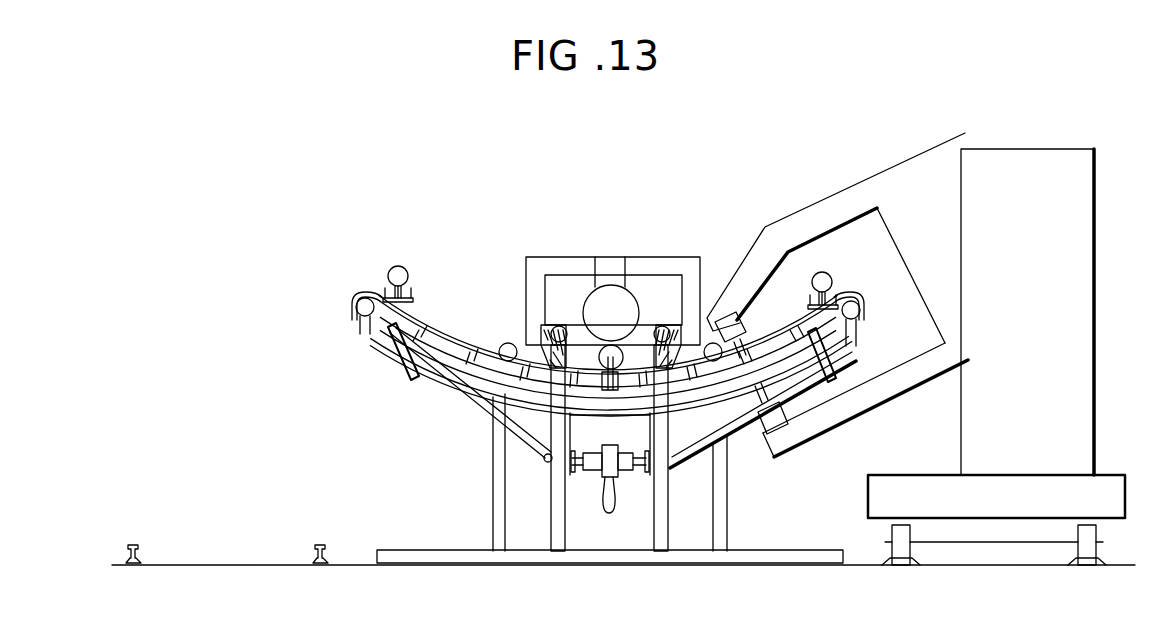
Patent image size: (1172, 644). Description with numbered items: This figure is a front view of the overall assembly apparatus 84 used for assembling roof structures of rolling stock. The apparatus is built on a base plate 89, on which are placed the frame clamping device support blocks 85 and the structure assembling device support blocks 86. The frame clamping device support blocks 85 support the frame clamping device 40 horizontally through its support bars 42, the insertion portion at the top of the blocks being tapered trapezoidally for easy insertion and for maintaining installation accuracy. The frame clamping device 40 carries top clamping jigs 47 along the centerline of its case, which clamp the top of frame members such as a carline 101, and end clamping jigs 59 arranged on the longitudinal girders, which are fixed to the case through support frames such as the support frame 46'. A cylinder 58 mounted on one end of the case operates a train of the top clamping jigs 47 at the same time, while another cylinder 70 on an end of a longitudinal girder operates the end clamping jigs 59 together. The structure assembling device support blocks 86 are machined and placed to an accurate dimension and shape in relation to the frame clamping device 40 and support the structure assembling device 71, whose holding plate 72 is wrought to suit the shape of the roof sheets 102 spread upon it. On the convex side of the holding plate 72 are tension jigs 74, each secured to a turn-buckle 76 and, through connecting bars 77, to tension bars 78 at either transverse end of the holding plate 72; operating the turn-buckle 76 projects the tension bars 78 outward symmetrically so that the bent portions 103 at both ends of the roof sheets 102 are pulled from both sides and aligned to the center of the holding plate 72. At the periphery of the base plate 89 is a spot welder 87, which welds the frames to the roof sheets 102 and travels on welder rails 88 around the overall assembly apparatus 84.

The frame clamping device 40 is at (517, 249).
The support bar 42 is at (540, 322).
The support frame 46' is at (592, 336).
The top clamping jig 47 is at (606, 391).
The pneumatic or hydraulic cylinder 58 is at (652, 374).
The end clamping jig 59 is at (408, 299).
The pneumatic or hydraulic cylinder 70 is at (393, 274).
The structure assembling device 71 is at (418, 385).
The holding plate 72 is at (393, 342).
The tension jig 74 is at (527, 465).
The turn-buckle 76 is at (593, 478).
The connecting bar 77 is at (470, 418).
The tension bar 78 is at (362, 316).
The overall assembly apparatus 84 is at (988, 110).
The frame clamping device support block 85 is at (660, 535).
The structure assembling device support block 86 is at (727, 516).
The spot welder 87 is at (1094, 302).
The welder rail 88 is at (993, 566).
The base plate 89 is at (399, 550).
The carline 101 is at (448, 324).
The roof sheet 102 is at (760, 335).
The bent portion 103 is at (352, 296).